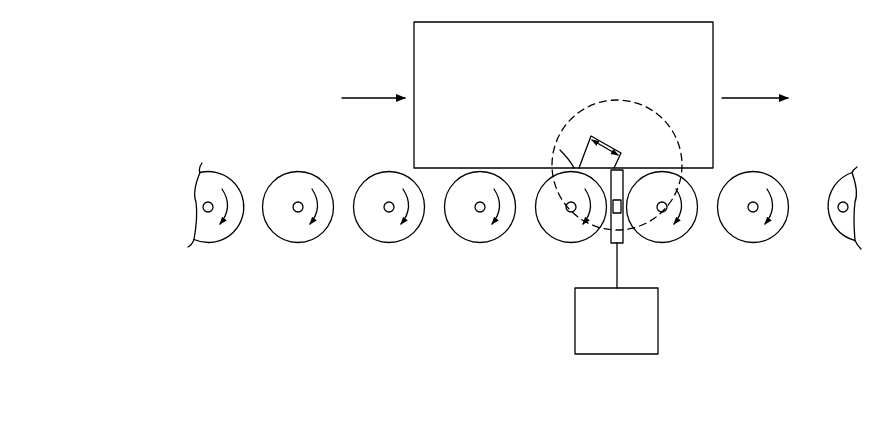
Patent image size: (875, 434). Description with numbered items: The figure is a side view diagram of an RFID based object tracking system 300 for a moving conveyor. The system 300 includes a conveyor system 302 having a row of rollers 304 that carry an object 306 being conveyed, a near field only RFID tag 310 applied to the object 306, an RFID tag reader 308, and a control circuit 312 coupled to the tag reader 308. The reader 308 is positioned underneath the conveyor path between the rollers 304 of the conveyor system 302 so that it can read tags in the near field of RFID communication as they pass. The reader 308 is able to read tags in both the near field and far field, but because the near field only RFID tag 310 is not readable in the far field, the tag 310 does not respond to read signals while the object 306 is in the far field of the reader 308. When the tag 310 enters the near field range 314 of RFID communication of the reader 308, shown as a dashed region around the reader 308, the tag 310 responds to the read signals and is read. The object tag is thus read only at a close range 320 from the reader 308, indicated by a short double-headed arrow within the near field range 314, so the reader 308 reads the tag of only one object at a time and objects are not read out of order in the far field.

The RFID based object tracking system 300 is at (194, 40).
The conveyor system 302 is at (388, 255).
The rollers 304 is at (300, 172).
The object 306 is at (413, 55).
The RFID tag reader 308 is at (611, 242).
The near field only RFID tag 310 is at (567, 150).
The control circuit 312 is at (659, 320).
The near field range 314 is at (645, 106).
The close range 320 is at (607, 145).